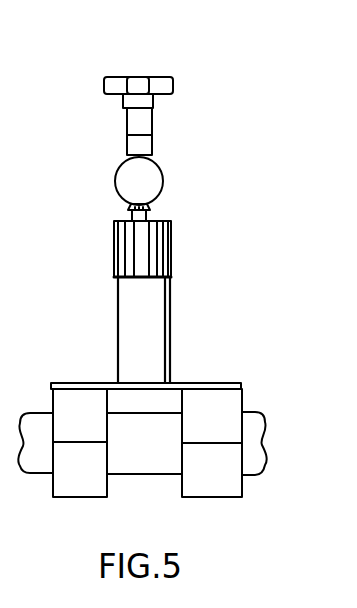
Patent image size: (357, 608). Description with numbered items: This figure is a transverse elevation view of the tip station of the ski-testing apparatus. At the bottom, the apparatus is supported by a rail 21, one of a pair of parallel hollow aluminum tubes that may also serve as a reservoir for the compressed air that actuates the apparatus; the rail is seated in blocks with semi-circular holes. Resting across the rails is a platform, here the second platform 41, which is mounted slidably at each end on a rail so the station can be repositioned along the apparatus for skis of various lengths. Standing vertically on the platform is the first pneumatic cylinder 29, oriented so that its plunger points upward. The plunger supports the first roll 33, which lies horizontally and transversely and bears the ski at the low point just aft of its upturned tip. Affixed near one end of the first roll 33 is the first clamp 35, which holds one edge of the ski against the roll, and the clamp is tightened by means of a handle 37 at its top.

The rail 21 is at (266, 445).
The first pneumatic cylinder 29 is at (171, 239).
The first roll 33 is at (163, 172).
The first clamp 35 is at (153, 138).
The handle 37 is at (143, 77).
The second platform 41 is at (196, 382).